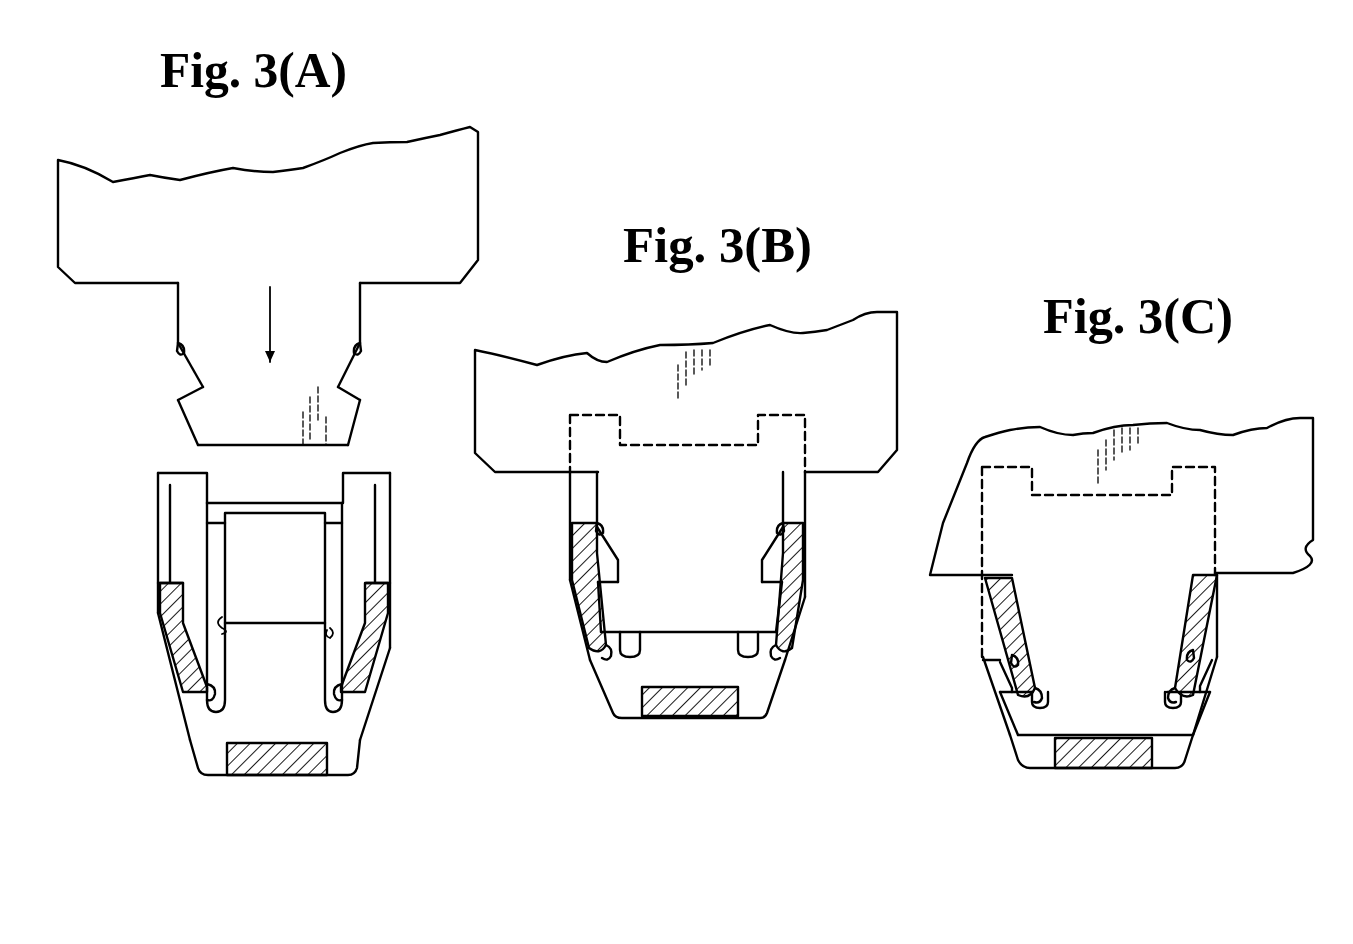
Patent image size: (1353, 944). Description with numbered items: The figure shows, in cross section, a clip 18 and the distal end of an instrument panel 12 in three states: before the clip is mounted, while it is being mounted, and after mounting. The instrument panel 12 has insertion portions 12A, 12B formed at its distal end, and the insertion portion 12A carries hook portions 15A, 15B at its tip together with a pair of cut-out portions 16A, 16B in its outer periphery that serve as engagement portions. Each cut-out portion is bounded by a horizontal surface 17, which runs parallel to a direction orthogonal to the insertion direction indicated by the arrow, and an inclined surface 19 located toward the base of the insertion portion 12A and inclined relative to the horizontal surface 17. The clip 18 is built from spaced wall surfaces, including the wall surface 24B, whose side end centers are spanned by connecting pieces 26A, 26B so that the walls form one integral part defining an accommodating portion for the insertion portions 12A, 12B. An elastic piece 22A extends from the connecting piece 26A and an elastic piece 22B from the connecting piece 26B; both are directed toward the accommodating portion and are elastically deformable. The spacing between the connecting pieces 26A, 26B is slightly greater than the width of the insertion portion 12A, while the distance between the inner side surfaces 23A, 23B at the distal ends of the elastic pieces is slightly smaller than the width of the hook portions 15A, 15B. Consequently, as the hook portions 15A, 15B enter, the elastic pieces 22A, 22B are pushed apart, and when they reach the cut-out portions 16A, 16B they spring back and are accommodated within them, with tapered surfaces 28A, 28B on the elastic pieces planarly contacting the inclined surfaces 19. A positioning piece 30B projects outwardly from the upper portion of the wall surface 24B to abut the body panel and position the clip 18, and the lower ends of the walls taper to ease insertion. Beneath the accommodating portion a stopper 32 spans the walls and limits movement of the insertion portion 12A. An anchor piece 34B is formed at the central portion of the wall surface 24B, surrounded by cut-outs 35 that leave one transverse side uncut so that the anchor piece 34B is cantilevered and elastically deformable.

In FIG. 3A, the instrument panel 12 is at (295, 295).
In FIG. 3B, the instrument panel 12 is at (718, 472).
In FIG. 3C, the instrument panel 12 is at (1124, 581).
In FIG. 3A, the insertion portion 12A is at (262, 373).
In FIG. 3B, the insertion portion 12A is at (686, 567).
In FIG. 3C, the insertion portion 12A is at (1124, 707).
In FIG. 3A, the insertion portion 12B is at (455, 245).
In FIG. 3B, the insertion portion 12B is at (882, 408).
In FIG. 3C, the insertion portion 12B is at (1218, 593).
In FIG. 3A, the hook portion 15A is at (180, 422).
In FIG. 3B, the hook portion 15A is at (599, 607).
In FIG. 3C, the hook portion 15A is at (1008, 737).
In FIG. 3A, the hook portion 15B is at (355, 435).
In FIG. 3B, the hook portion 15B is at (779, 607).
In FIG. 3C, the hook portion 15B is at (1200, 730).
In FIG. 3A, the cut-out portion 16A is at (182, 367).
In FIG. 3B, the cut-out portion 16A is at (598, 560).
In FIG. 3C, the cut-out portion 16A is at (997, 687).
In FIG. 3A, the cut-out portion 16B is at (355, 369).
In FIG. 3B, the cut-out portion 16B is at (772, 570).
In FIG. 3C, the cut-out portion 16B is at (1205, 673).
In FIG. 3A, the horizontal surface 17 is at (180, 393).
In FIG. 3B, the horizontal surface 17 is at (597, 582).
In FIG. 3C, the horizontal surface 17 is at (1003, 693).
In FIG. 3A, the clip 18 is at (274, 632).
In FIG. 3B, the clip 18 is at (687, 587).
In FIG. 3C, the clip 18 is at (1098, 637).
In FIG. 3A, the inclined surface 19 is at (183, 357).
In FIG. 3B, the inclined surface 19 is at (607, 547).
In FIG. 3C, the inclined surface 19 is at (1013, 657).
In FIG. 3A, the elastic piece 22A is at (173, 673).
In FIG. 3B, the elastic piece 22A is at (572, 626).
In FIG. 3C, the elastic piece 22A is at (993, 660).
In FIG. 3A, the elastic piece 22B is at (378, 673).
In FIG. 3B, the elastic piece 22B is at (806, 623).
In FIG. 3C, the elastic piece 22B is at (1215, 660).
In FIG. 3A, the inner side surface 23A is at (207, 708).
In FIG. 3B, the inner side surface 23A is at (610, 647).
In FIG. 3C, the inner side surface 23A is at (1048, 693).
In FIG. 3A, the inner side surface 23B is at (345, 703).
In FIG. 3B, the inner side surface 23B is at (792, 657).
In FIG. 3C, the inner side surface 23B is at (1170, 687).
In FIG. 3A, the wall surface 24B is at (362, 528).
In FIG. 3B, the wall surface 24B is at (803, 440).
In FIG. 3C, the wall surface 24B is at (1215, 538).
In FIG. 3A, the connecting piece 26A is at (160, 597).
In FIG. 3B, the connecting piece 26A is at (580, 530).
In FIG. 3C, the connecting piece 26A is at (987, 590).
In FIG. 3A, the connecting piece 26B is at (392, 602).
In FIG. 3B, the connecting piece 26B is at (800, 547).
In FIG. 3C, the connecting piece 26B is at (1180, 628).
In FIG. 3A, the tapered surface 28A is at (210, 685).
In FIG. 3B, the tapered surface 28A is at (600, 610).
In FIG. 3C, the tapered surface 28A is at (1035, 660).
In FIG. 3A, the tapered surface 28B is at (340, 685).
In FIG. 3B, the tapered surface 28B is at (778, 610).
In FIG. 3C, the tapered surface 28B is at (1192, 660).
In FIG. 3A, the positioning piece 30B is at (255, 507).
In FIG. 3A, the stopper 32 is at (287, 765).
In FIG. 3B, the stopper 32 is at (730, 710).
In FIG. 3C, the stopper 32 is at (1108, 768).
In FIG. 3A, the anchor piece 34B is at (307, 563).
In FIG. 3A, the cut-out 35 is at (225, 630).